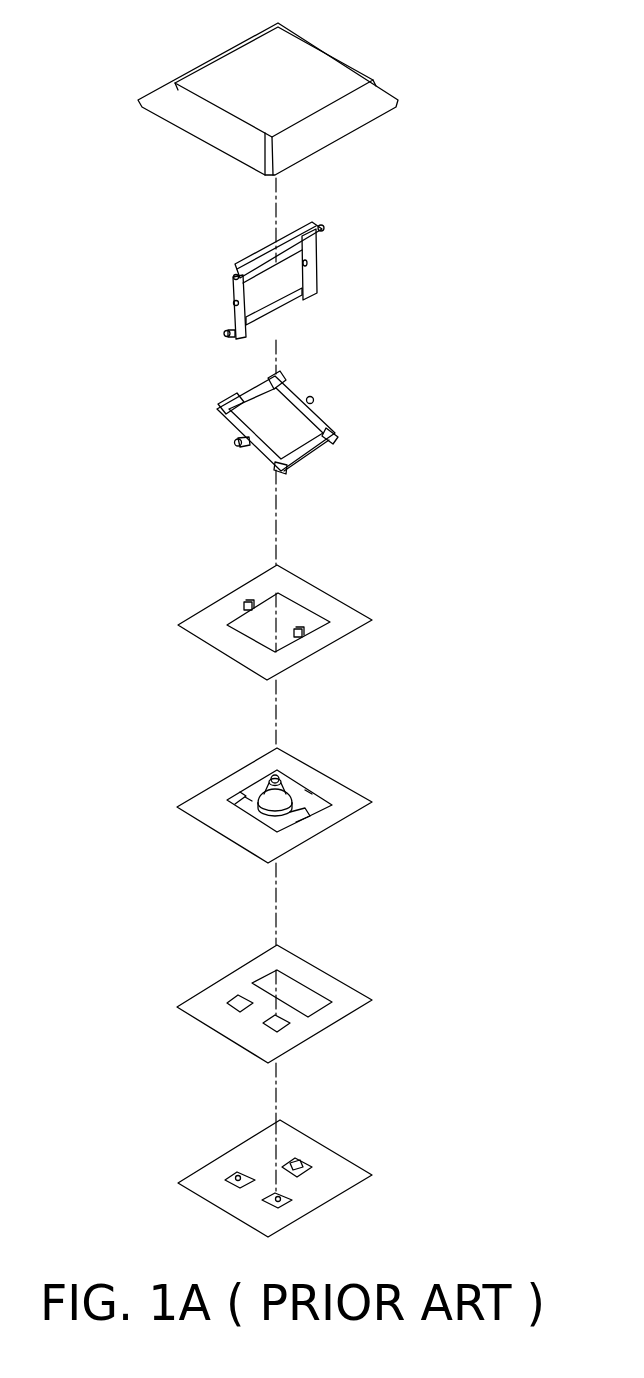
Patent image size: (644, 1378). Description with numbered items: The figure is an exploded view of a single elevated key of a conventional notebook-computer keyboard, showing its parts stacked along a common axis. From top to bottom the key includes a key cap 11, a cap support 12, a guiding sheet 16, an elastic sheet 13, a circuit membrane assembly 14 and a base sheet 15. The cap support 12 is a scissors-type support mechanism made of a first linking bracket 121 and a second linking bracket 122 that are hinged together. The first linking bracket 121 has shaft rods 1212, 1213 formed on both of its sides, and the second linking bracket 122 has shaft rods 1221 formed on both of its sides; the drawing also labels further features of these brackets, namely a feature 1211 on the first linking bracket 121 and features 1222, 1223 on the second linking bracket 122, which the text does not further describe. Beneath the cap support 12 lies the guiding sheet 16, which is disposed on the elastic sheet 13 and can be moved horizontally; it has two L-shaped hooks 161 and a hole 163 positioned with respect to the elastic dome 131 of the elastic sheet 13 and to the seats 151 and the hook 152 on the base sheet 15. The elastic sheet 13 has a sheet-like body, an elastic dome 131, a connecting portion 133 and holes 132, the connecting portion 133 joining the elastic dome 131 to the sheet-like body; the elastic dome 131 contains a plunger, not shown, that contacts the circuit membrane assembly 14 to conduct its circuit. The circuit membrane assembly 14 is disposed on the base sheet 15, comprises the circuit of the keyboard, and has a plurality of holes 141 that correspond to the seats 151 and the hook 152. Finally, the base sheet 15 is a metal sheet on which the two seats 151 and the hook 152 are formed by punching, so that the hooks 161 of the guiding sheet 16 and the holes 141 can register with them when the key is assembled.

The key cap 11 is at (328, 48).
The cap support 12 is at (434, 220).
The first linking bracket 121 is at (263, 297).
The pivot hole 1211 is at (234, 303).
The shaft rod 1212 is at (225, 335).
The shaft rod 1213 is at (234, 277).
The second linking bracket 122 is at (284, 422).
The shaft rod 1221 is at (235, 443).
The bar 1222 is at (303, 450).
The pivot block 1223 is at (236, 394).
The guiding sheet 16 is at (290, 604).
The L-shaped hook 161 is at (247, 602).
The hole 163 is at (292, 615).
The elastic sheet 13 is at (284, 799).
The elastic dome 131 is at (268, 785).
The hole 132 is at (242, 800).
The connecting portion 133 is at (300, 815).
The circuit membrane assembly 14 is at (275, 994).
The hole 141 is at (275, 1017).
The base sheet 15 is at (276, 1166).
The seat 151 is at (280, 1197).
The hook 152 is at (297, 1163).